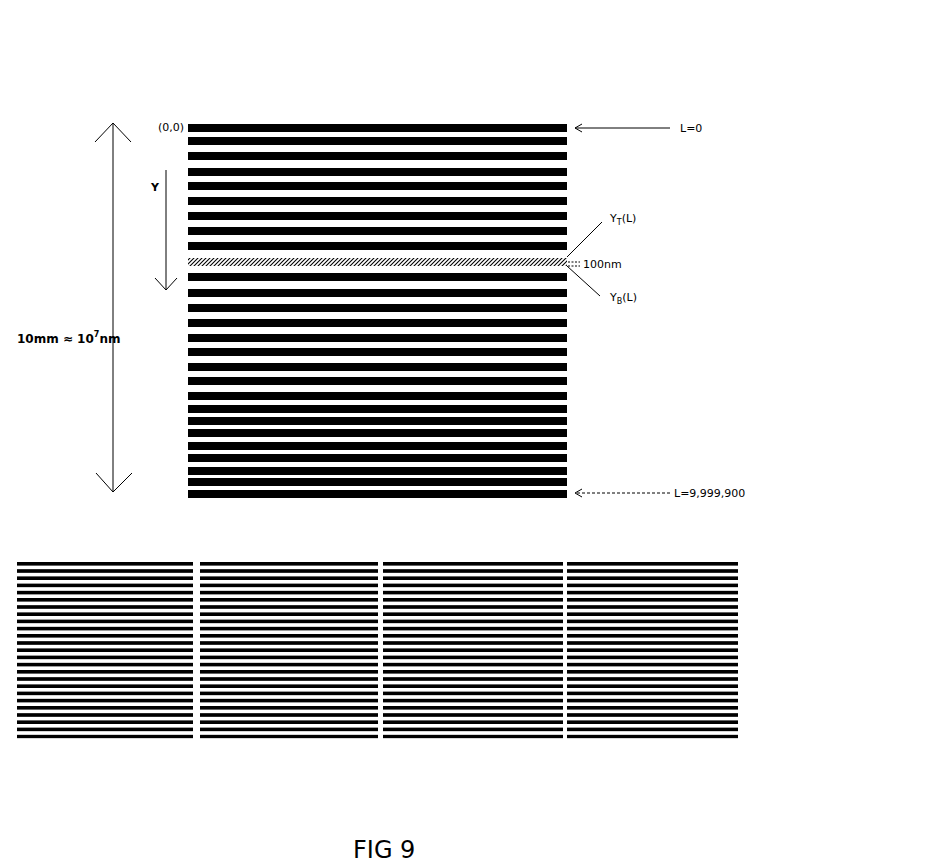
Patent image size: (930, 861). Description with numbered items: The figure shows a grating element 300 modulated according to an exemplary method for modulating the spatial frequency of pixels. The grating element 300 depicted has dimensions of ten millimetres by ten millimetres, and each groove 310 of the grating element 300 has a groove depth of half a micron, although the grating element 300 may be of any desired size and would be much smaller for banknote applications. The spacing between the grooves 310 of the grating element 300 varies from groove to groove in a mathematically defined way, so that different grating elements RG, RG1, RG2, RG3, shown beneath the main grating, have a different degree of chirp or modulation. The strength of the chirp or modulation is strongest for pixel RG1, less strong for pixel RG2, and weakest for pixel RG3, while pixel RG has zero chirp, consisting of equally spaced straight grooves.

The grating element 300 is at (452, 251).
The groove 310 is at (567, 323).
The pixel RG1 is at (105, 658).
The pixel RG2 is at (289, 658).
The pixel RG3 is at (473, 658).
The pixel RG is at (652, 658).